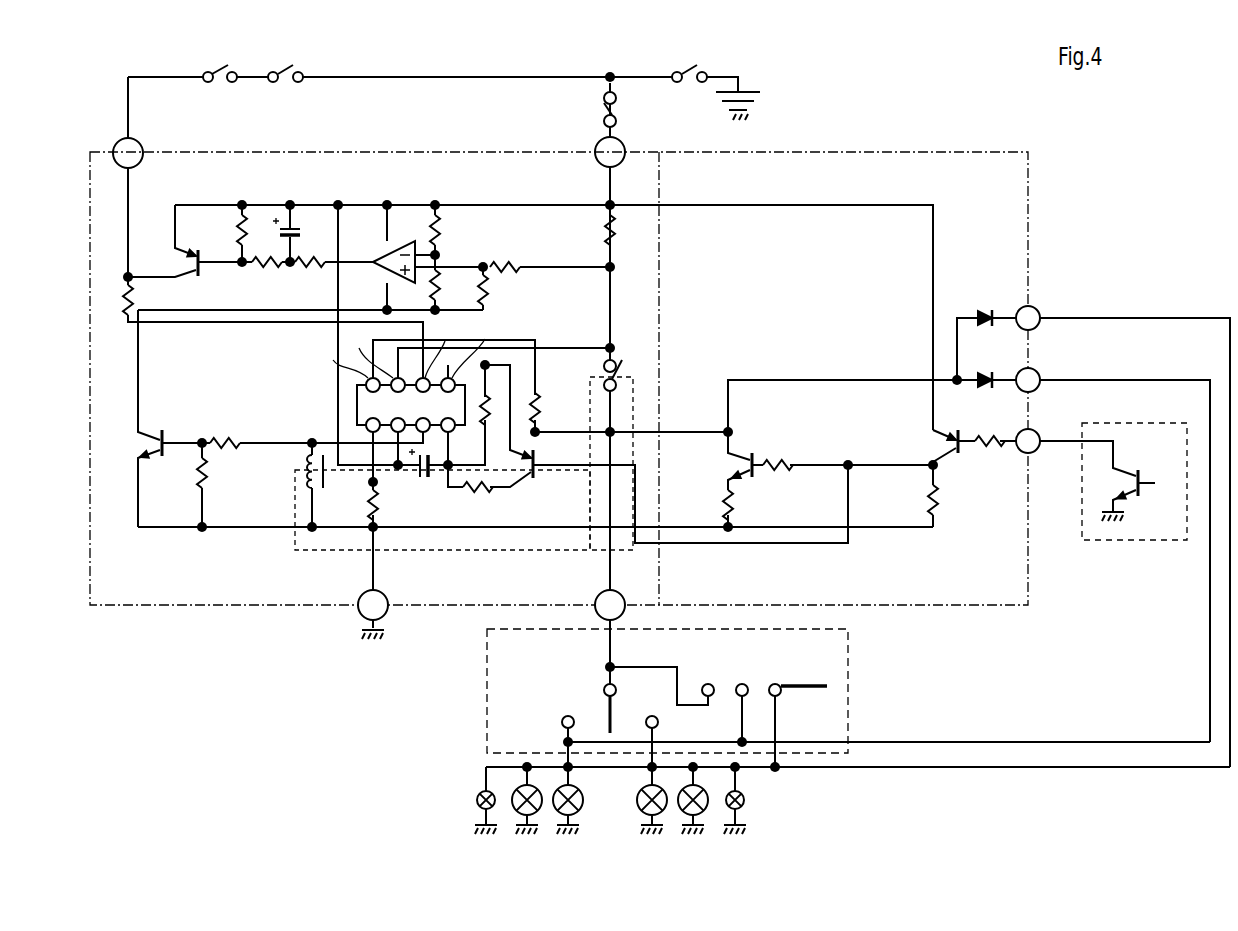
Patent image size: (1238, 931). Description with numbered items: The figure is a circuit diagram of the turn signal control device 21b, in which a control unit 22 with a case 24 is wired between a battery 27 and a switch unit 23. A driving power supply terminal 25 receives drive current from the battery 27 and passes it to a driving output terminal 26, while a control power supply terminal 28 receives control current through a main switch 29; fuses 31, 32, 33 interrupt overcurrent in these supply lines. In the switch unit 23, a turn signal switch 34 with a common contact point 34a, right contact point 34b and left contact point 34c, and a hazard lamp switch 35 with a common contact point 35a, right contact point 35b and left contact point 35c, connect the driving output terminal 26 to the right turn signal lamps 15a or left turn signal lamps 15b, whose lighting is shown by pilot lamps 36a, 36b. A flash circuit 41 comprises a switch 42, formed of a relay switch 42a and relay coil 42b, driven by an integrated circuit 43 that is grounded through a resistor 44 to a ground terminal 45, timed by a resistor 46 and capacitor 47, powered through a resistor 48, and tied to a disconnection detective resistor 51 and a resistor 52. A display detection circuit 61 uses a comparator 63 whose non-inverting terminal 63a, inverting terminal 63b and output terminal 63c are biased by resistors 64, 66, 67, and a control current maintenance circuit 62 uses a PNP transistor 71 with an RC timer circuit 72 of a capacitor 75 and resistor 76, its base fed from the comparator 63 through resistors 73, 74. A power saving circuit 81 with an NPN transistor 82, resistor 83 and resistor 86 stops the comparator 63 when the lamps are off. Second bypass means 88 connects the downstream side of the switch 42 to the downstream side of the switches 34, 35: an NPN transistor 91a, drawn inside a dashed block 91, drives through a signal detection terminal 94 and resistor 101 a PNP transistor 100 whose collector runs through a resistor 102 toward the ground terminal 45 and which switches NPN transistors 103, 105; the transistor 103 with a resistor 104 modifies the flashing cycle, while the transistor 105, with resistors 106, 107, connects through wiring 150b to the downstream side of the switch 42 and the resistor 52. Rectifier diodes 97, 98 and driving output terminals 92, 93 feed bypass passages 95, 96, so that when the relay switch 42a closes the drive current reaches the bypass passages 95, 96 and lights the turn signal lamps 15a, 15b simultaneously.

The right turn signal lamps 15a is at (709, 813).
The left turn signal lamps 15b is at (584, 813).
The turn signal control device 21b is at (845, 78).
The control unit 22 is at (397, 145).
The switch unit 23 is at (485, 707).
The case 24 is at (337, 150).
The driving power supply terminal 25 is at (622, 143).
The driving output terminal 26 is at (598, 593).
The battery 27 is at (778, 99).
The control power supply terminal 28 is at (138, 143).
The main switch 29 is at (287, 70).
The fuse 31 is at (690, 70).
The fuse 32 is at (604, 114).
The fuse 33 is at (224, 70).
The turn signal switch 34 is at (591, 701).
The common contact point 34a is at (617, 691).
The right contact point 34b is at (659, 723).
The left contact point 34c is at (561, 723).
The hazard lamp switch 35 is at (791, 678).
The common contact point 35a is at (708, 684).
The right contact point 35b is at (781, 696).
The left contact point 35c is at (742, 684).
The pilot lamp 36a is at (745, 803).
The pilot lamp 36b is at (476, 803).
The flash circuit 41 is at (462, 562).
The switch 42 is at (627, 358).
The relay switch 42a is at (623, 390).
The relay coil 42b is at (295, 483).
The integrated circuit 43 is at (350, 407).
The resistor 44 is at (370, 506).
The ground terminal 45 is at (361, 593).
The resistor 46 is at (479, 421).
The capacitor 47 is at (422, 479).
The resistor 48 is at (134, 300).
The disconnection detective resistor 51 is at (605, 237).
The resistor 52 is at (540, 409).
The display detection circuit 61 is at (436, 193).
The control current maintenance circuit 62 is at (243, 193).
The comparator 63 is at (370, 238).
The non-inverting terminal 63a is at (419, 284).
The inverting terminal 63b is at (432, 212).
The output terminal 63c is at (385, 284).
The resistor 64 is at (522, 264).
The resistor 66 is at (490, 295).
The resistor 67 is at (440, 290).
The PNP transistor 71 is at (209, 274).
The RC timer circuit 72 is at (289, 193).
The resistor 73 is at (268, 268).
The resistor 74 is at (312, 268).
The capacitor 75 is at (297, 228).
The resistor 76 is at (238, 236).
The power saving circuit 81 is at (207, 430).
The NPN transistor 82 is at (167, 433).
The resistor 83 is at (232, 438).
The resistor 86 is at (208, 479).
The second bypass means 88 is at (907, 150).
The external unit 91 is at (1122, 542).
The NPN transistor 91a is at (1129, 462).
The driving output terminal 92 is at (1038, 310).
The driving output terminal 93 is at (1038, 371).
The signal detection terminal 94 is at (1038, 432).
The bypass passage 95 is at (1125, 316).
The bypass passage 96 is at (1125, 378).
The rectifier diode 97 is at (987, 306).
The rectifier diode 98 is at (987, 368).
The PNP transistor 100 is at (942, 425).
The resistor 101 is at (988, 453).
The resistor 102 is at (942, 500).
The NPN transistor 103 is at (527, 487).
The resistor 104 is at (477, 490).
The NPN transistor 105 is at (744, 446).
The resistor 106 is at (777, 473).
The resistor 107 is at (720, 506).
The wiring 150b is at (685, 430).